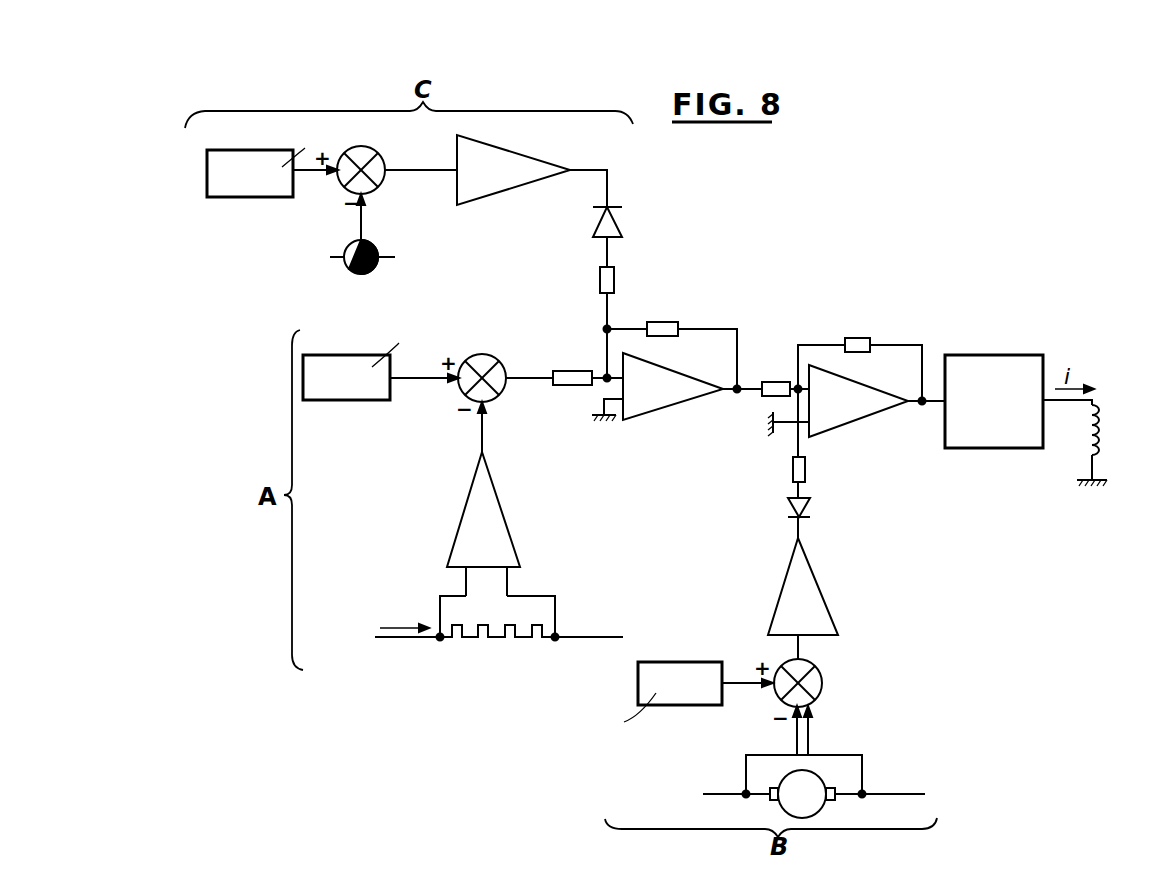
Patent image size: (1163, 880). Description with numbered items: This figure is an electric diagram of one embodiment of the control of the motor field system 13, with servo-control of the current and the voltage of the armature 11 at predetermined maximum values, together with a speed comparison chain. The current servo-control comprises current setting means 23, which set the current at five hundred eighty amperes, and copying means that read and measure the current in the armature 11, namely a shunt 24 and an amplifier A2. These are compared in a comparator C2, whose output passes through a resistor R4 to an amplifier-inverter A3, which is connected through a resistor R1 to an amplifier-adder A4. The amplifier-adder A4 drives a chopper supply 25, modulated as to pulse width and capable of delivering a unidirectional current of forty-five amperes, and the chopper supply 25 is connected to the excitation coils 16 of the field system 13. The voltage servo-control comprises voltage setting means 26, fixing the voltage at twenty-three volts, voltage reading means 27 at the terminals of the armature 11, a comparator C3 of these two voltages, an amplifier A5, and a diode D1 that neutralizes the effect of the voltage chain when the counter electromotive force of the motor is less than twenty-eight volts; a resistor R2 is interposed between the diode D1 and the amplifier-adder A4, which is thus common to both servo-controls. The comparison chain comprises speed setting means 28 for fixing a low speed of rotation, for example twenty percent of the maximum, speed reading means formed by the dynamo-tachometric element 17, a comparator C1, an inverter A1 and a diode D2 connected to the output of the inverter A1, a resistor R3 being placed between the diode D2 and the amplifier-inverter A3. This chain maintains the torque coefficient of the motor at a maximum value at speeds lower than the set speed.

The speed setting means 28 is at (207, 170).
The dynamo-tachometric element 17 is at (375, 265).
The current setting means 23 is at (320, 388).
The armature 11 is at (403, 641).
The shunt 24 is at (500, 641).
The chopper supply 25 is at (995, 366).
The excitation coils 16 is at (1100, 440).
The field system 13 is at (1111, 462).
The voltage setting means 26 is at (706, 664).
The voltage reading means 27 is at (828, 745).
The comparator C1 is at (382, 178).
The comparator C2 is at (497, 387).
The comparator C3 is at (822, 683).
The inverter A1 is at (512, 190).
The amplifier A2 is at (474, 523).
The amplifier-inverter A3 is at (666, 371).
The amplifier-adder A4 is at (847, 387).
The amplifier A5 is at (818, 607).
The resistor R1 is at (778, 374).
The resistor R2 is at (818, 470).
The resistor R3 is at (629, 280).
The resistor R4 is at (572, 361).
The diode D1 is at (823, 508).
The diode D2 is at (628, 222).